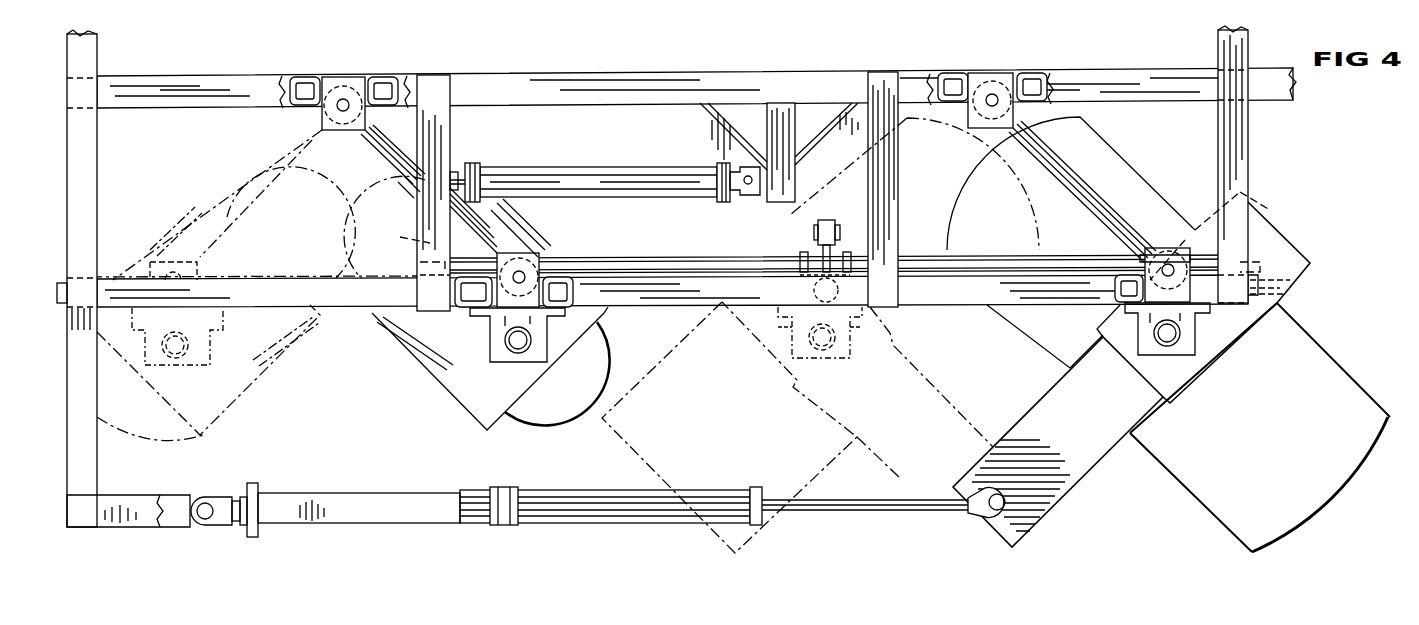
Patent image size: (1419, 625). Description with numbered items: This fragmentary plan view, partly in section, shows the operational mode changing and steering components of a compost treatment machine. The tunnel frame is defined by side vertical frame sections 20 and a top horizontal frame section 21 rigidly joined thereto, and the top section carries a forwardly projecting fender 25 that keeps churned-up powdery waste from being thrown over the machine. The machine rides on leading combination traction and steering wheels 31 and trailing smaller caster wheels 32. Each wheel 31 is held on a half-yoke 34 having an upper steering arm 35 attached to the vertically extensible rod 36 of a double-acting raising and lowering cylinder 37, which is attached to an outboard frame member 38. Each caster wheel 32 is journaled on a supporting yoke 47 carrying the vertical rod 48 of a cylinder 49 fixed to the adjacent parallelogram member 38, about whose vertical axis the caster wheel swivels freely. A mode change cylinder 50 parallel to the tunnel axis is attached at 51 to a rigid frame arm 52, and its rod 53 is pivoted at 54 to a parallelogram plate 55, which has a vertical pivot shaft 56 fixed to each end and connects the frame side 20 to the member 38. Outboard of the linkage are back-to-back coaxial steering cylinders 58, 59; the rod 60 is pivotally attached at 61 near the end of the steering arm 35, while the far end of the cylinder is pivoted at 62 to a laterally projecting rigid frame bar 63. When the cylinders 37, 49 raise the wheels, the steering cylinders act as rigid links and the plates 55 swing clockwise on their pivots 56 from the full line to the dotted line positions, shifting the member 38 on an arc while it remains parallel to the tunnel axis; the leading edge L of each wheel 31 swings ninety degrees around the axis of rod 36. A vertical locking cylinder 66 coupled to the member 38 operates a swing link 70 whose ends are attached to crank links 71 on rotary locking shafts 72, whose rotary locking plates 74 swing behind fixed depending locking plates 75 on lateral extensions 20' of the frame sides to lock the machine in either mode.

The side vertical frame section 20 is at (696, 71).
The lateral extension of tunnel frame side 20' is at (902, 189).
The top horizontal frame section 21 is at (86, 63).
The fender 25 is at (1258, 101).
The combination traction and steering wheel 31 is at (808, 500).
The caster wheel 32 is at (146, 433).
The half-yoke 34 is at (712, 230).
The steering arm 35 is at (1100, 430).
The rod of raising and lowering cylinder 36 is at (188, 370).
The raising and lowering cylinder 37 is at (212, 352).
The outboard frame member 38 is at (362, 307).
The supporting yoke 47 is at (596, 323).
The vertical rod of caster cylinder 48 is at (518, 353).
The caster wheel cylinder 49 is at (436, 378).
The mode change cylinder 50 is at (598, 173).
The attachment of mode change cylinder 51 is at (738, 170).
The rigid frame arm 52 is at (785, 105).
The rod of mode change cylinder 53 is at (478, 170).
The pivot of cylinder rod 54 is at (450, 118).
The parallelogram plate 55 is at (372, 150).
The vertical pivot shaft 56 is at (343, 103).
The left hand mode steering cylinder 58 is at (605, 508).
The right hand mode steering cylinder 59 is at (360, 505).
The steering cylinder rod 60 is at (885, 512).
The pivotal attachment of steering rod 61 is at (997, 515).
The pivotal attachment of steering cylinder 62 is at (206, 517).
The rigid frame bar 63 is at (145, 518).
The locking cylinder 66 is at (782, 310).
The swing link 70 is at (838, 226).
The crank link 71 is at (815, 241).
The rotary locking shaft 72 is at (1000, 258).
The rotary locking plate 74 is at (418, 245).
The fixed depending locking plate 75 is at (418, 276).
The leading edge of traction wheel L is at (966, 132).